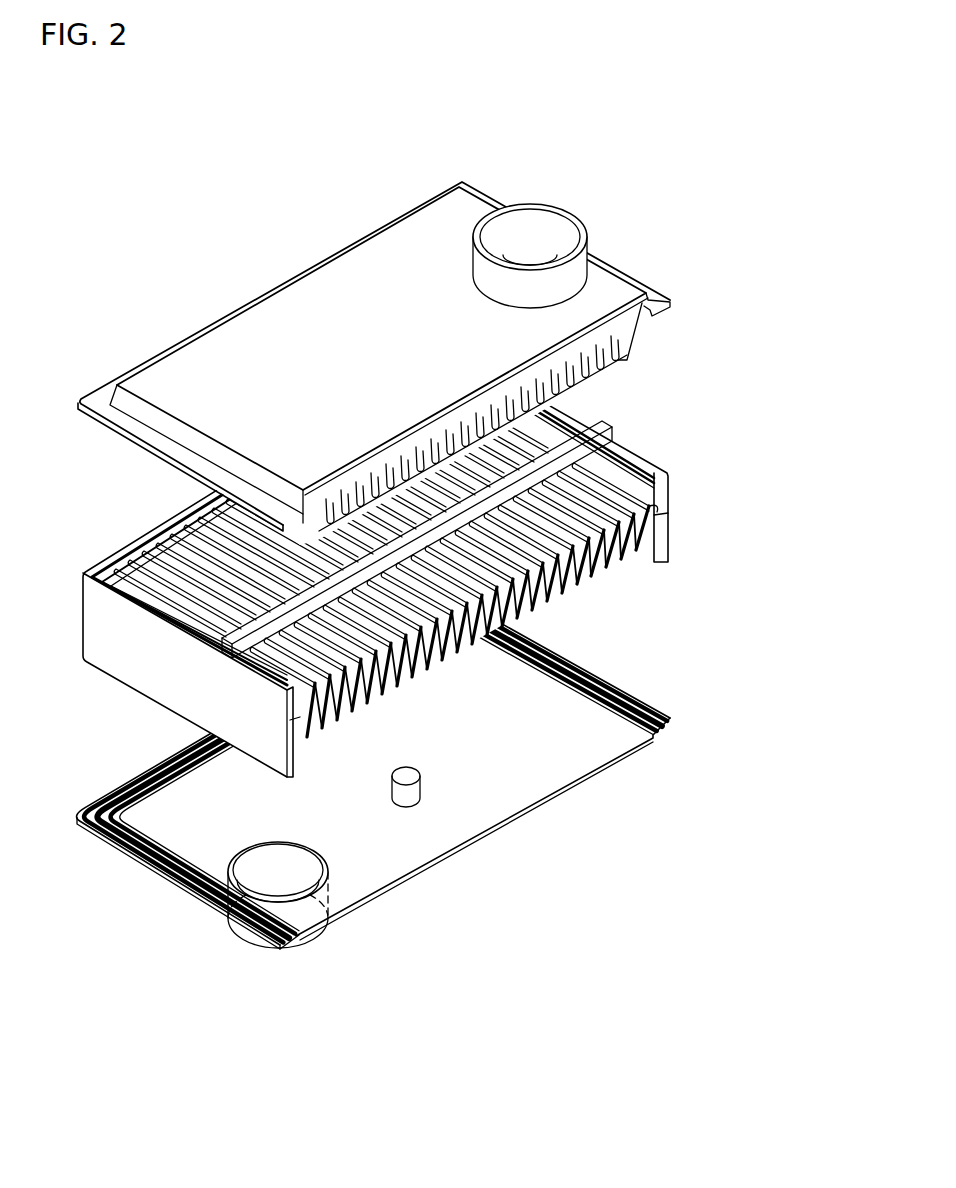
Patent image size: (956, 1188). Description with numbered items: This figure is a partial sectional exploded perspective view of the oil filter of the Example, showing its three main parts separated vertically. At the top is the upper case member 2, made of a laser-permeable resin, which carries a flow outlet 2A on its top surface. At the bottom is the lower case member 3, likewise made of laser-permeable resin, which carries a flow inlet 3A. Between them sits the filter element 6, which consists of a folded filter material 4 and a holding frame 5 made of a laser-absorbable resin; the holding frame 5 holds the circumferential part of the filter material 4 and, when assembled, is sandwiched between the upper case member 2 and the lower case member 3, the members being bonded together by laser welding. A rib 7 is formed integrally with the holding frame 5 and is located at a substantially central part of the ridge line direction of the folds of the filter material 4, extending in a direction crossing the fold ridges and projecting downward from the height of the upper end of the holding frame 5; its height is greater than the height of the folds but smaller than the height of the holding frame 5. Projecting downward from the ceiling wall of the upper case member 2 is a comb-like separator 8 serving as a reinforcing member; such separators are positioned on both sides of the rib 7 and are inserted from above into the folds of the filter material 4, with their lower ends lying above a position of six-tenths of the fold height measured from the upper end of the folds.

The upper case member 2 is at (387, 356).
The flow outlet 2A is at (537, 237).
The lower case member 3 is at (373, 839).
The flow inlet 3A is at (279, 967).
The filter material 4 is at (185, 560).
The holding frame 5 is at (113, 641).
The filter element 6 is at (356, 557).
The rib 7 is at (572, 421).
The comb-like separator 8 is at (620, 381).